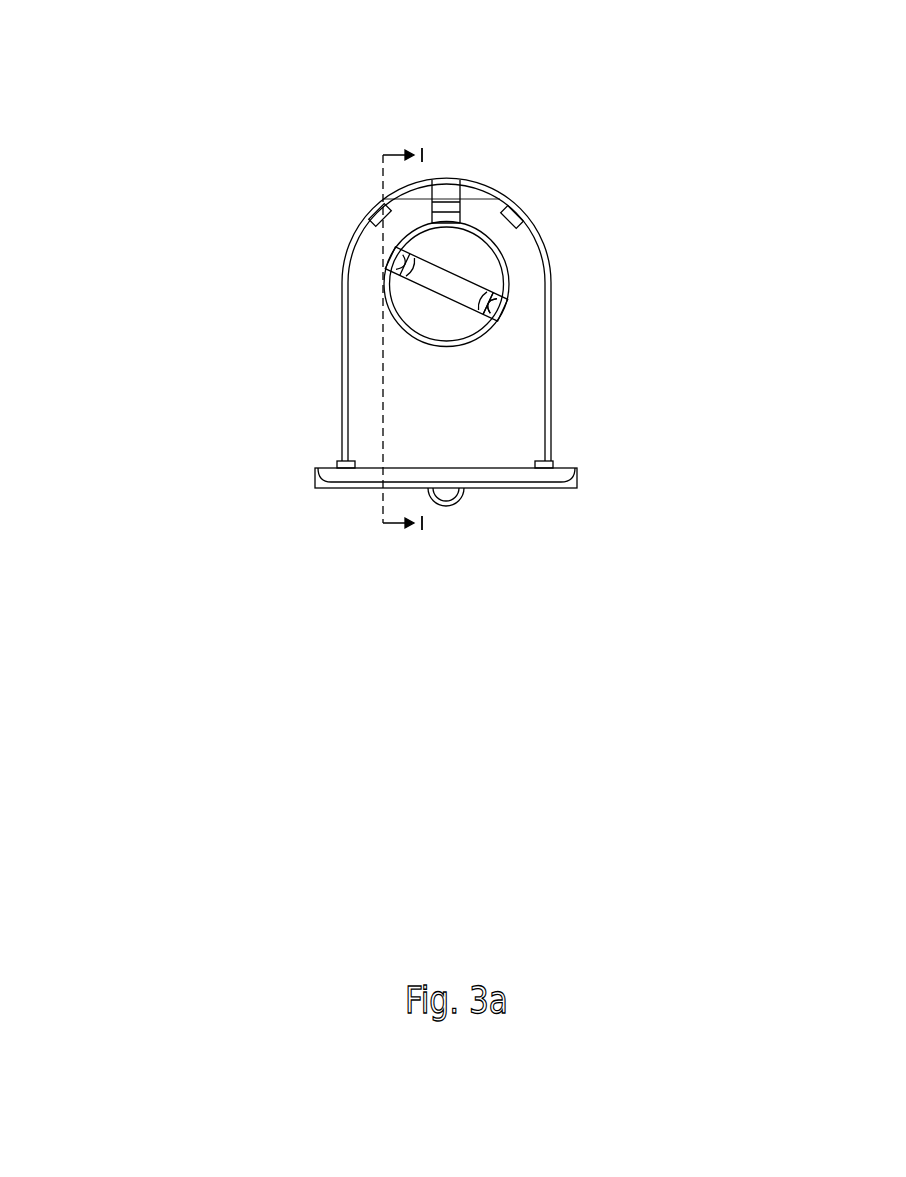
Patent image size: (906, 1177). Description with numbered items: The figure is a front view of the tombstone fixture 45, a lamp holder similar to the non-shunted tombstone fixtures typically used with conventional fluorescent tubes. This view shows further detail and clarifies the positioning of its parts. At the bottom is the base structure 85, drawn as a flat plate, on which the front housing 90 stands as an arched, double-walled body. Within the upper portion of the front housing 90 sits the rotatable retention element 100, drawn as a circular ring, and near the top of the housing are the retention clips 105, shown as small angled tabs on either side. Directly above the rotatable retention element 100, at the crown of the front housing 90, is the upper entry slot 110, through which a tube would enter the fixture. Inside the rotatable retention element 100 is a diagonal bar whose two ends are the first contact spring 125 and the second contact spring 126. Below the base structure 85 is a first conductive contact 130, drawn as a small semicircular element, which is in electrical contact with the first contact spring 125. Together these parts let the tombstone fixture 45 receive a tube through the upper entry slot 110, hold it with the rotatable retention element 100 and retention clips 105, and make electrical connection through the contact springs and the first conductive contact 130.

The tombstone fixture 45 is at (200, 492).
The base structure 85 is at (578, 472).
The front housing 90 is at (528, 380).
The rotatable retention element 100 is at (443, 282).
The retention clips 105 is at (363, 218).
The upper entry slot 110 is at (465, 182).
The first contact spring 125 is at (392, 279).
The second contact spring 126 is at (507, 292).
The first conductive contact 130 is at (463, 500).